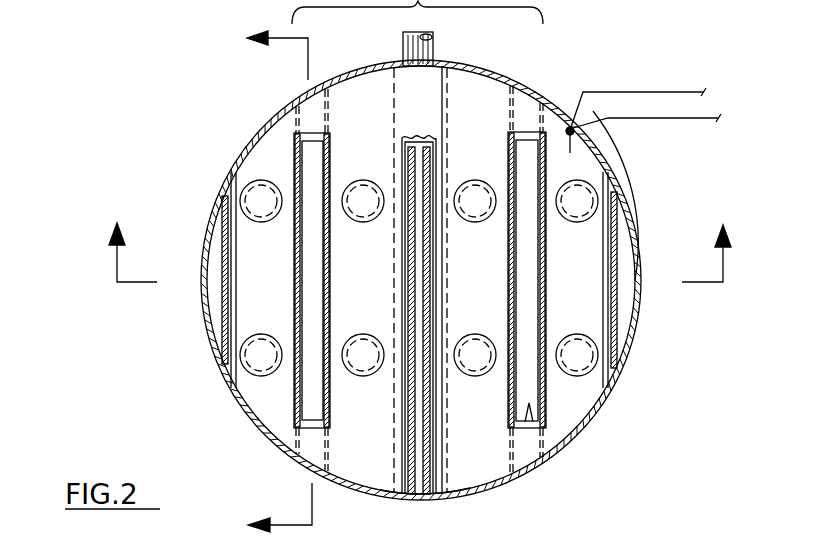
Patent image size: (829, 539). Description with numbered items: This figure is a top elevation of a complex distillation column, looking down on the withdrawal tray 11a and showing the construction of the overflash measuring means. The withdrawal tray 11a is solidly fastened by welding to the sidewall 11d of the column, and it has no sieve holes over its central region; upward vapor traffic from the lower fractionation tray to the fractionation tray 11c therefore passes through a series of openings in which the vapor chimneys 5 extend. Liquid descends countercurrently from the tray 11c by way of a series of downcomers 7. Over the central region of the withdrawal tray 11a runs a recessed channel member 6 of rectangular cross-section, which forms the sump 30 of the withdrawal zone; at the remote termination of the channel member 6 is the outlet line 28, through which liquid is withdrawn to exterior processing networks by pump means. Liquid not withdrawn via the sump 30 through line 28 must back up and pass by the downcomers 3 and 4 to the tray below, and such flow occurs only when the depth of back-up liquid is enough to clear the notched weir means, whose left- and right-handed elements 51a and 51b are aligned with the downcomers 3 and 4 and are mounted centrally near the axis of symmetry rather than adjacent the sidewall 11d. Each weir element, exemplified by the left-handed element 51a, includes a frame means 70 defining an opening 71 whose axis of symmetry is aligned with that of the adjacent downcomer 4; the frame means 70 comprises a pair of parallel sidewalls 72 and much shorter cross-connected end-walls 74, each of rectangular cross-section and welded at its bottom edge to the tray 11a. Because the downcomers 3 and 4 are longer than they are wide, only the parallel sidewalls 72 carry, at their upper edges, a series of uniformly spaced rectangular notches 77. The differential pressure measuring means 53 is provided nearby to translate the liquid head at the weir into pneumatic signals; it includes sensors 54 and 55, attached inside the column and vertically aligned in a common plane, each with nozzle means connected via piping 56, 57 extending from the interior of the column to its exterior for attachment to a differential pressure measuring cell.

The downcomer 3 is at (420, 271).
The downcomer 4 is at (293, 282).
The vapor chimney 5 is at (363, 178).
The recessed channel member 6 is at (443, 475).
The downcomer 7 is at (223, 263).
The withdrawal tray 11a is at (577, 402).
The fractionation tray 11c is at (436, 513).
The sidewall 11d is at (625, 307).
The outlet line 28 is at (435, 47).
The sump 30 is at (422, 117).
The left-handed weir element 51a is at (230, 270).
The right-handed weir element 51b is at (429, 305).
The differential pressure measuring means 53 is at (779, 529).
The sensor 54 is at (570, 153).
The terminal sensor 55 is at (568, 133).
The piping 56 is at (680, 90).
The piping 57 is at (691, 122).
The frame means 70 is at (530, 412).
The opening 71 is at (315, 166).
The parallel sidewalls 72 is at (325, 317).
The end-walls 74 is at (315, 133).
The rectangular notches 77 is at (510, 283).